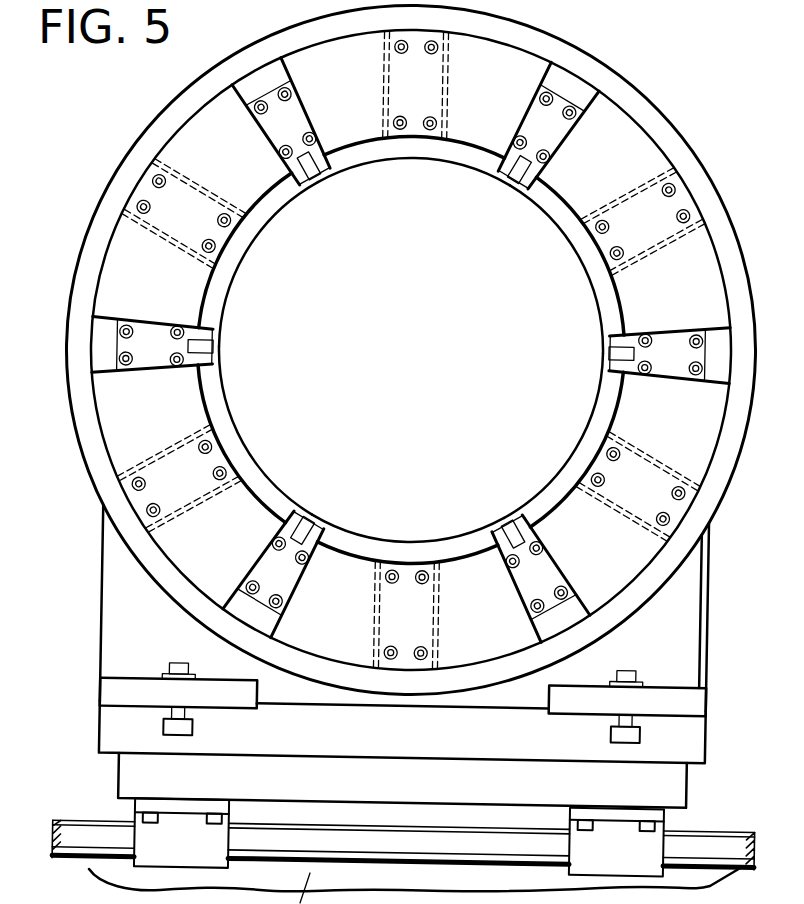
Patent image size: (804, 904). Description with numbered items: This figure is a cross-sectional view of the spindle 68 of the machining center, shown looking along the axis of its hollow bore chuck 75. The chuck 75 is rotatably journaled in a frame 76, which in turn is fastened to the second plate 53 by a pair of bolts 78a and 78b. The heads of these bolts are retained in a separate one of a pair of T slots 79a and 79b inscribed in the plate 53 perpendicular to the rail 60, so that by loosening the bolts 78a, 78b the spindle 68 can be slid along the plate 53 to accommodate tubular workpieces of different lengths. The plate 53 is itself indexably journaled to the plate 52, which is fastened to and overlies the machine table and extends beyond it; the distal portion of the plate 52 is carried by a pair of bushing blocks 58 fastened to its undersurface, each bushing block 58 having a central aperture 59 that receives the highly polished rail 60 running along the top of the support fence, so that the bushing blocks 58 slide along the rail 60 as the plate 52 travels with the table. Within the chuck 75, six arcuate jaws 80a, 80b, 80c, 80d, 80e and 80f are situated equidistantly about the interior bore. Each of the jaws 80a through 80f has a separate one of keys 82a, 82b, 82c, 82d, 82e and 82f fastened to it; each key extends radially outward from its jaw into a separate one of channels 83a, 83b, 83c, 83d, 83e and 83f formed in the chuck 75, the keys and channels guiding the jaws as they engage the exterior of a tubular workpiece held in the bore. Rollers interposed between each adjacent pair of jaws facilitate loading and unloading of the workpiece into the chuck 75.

The plate 52 is at (655, 780).
The second plate 53 is at (682, 737).
The bushing block 58 is at (650, 848).
The aperture 59 is at (207, 853).
The rail 60 is at (75, 828).
The spindle 68 is at (113, 145).
The hollow bore chuck 75 is at (665, 123).
The frame 76 is at (102, 612).
The bolt 78a is at (185, 662).
The bolt 78b is at (627, 668).
The T slot 79a is at (192, 728).
The T slot 79b is at (610, 733).
The arcuate jaw 80a is at (393, 548).
The arcuate jaw 80b is at (568, 470).
The arcuate jaw 80c is at (588, 282).
The arcuate jaw 80d is at (418, 152).
The arcuate jaw 80e is at (237, 245).
The arcuate jaw 80f is at (255, 440).
The key 82a is at (397, 615).
The key 82b is at (632, 505).
The key 82c is at (637, 217).
The key 82d is at (413, 68).
The key 82e is at (183, 220).
The key 82f is at (172, 455).
The channel 83a is at (435, 628).
The channel 83b is at (645, 448).
The channel 83c is at (660, 250).
The channel 83d is at (448, 108).
The channel 83e is at (217, 160).
The channel 83f is at (210, 503).